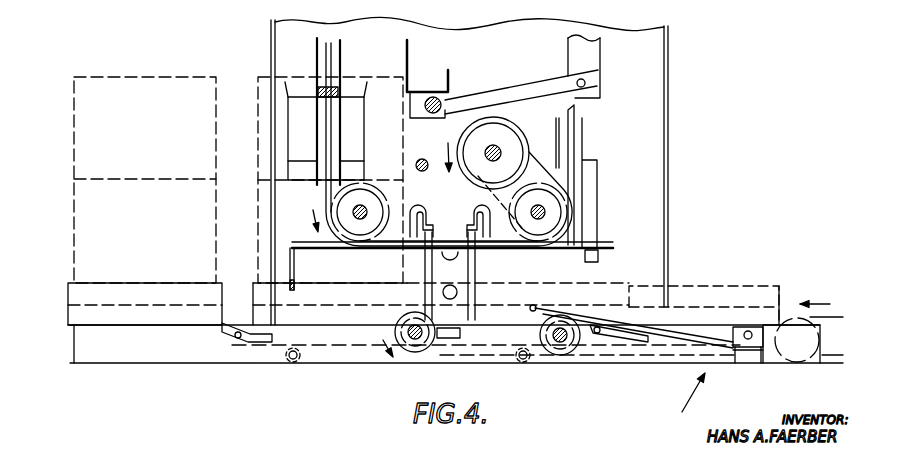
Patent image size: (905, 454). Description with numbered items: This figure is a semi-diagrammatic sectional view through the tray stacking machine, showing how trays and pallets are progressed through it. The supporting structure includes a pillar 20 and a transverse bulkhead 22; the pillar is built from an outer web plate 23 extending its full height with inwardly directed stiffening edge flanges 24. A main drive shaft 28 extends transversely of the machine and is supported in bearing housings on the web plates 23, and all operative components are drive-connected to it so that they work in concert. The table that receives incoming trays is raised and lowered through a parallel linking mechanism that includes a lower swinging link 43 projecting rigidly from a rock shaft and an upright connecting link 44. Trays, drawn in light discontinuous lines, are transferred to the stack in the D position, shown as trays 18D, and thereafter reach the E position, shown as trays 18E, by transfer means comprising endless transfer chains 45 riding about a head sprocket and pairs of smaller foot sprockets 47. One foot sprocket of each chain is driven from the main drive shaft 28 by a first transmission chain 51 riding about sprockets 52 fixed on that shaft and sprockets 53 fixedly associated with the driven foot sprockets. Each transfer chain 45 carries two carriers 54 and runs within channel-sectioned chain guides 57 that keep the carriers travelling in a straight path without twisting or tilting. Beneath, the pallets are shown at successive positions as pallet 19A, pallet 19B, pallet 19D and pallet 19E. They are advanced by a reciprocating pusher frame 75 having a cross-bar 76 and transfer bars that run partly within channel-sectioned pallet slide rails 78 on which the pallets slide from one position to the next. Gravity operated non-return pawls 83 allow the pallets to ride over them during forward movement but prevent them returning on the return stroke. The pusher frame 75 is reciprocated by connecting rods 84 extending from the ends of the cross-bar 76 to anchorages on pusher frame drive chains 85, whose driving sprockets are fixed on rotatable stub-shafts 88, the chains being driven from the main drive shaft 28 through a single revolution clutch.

The trays in the D position 18D is at (263, 152).
The trays in the E position 18E is at (145, 180).
The pallet in the A position 19A is at (707, 294).
The pallet in the B position 19B is at (512, 298).
The pallet in the D position 19D is at (293, 315).
The pallet in the E position 19E is at (140, 315).
The pillar 20 is at (682, 95).
The transverse bulkhead 22 is at (412, 53).
The outer web plate 23 is at (643, 128).
The stiffening edge flanges 24 is at (272, 33).
The main drive shaft 28 is at (487, 153).
The lower swinging link 43 is at (483, 93).
The upright connecting link 44 is at (588, 52).
The endless transfer chain 45 is at (570, 182).
The foot sprockets 47 is at (322, 207).
The first transmission chain 51 is at (528, 150).
The sprockets on the main drive shaft 52 is at (512, 135).
The sprockets on the foot sprockets 53 is at (533, 215).
The carrier 54 is at (487, 278).
The chain guides 57 is at (317, 63).
The reciprocating pusher frame 75 is at (680, 400).
The cross-bar 76 is at (762, 335).
The pallet slide rails 78 is at (197, 355).
The non-return pawls 83 is at (250, 345).
The connecting rod 84 is at (673, 333).
The pusher frame drive chains 85 is at (505, 360).
The rotatable stub-shaft 88 is at (417, 340).